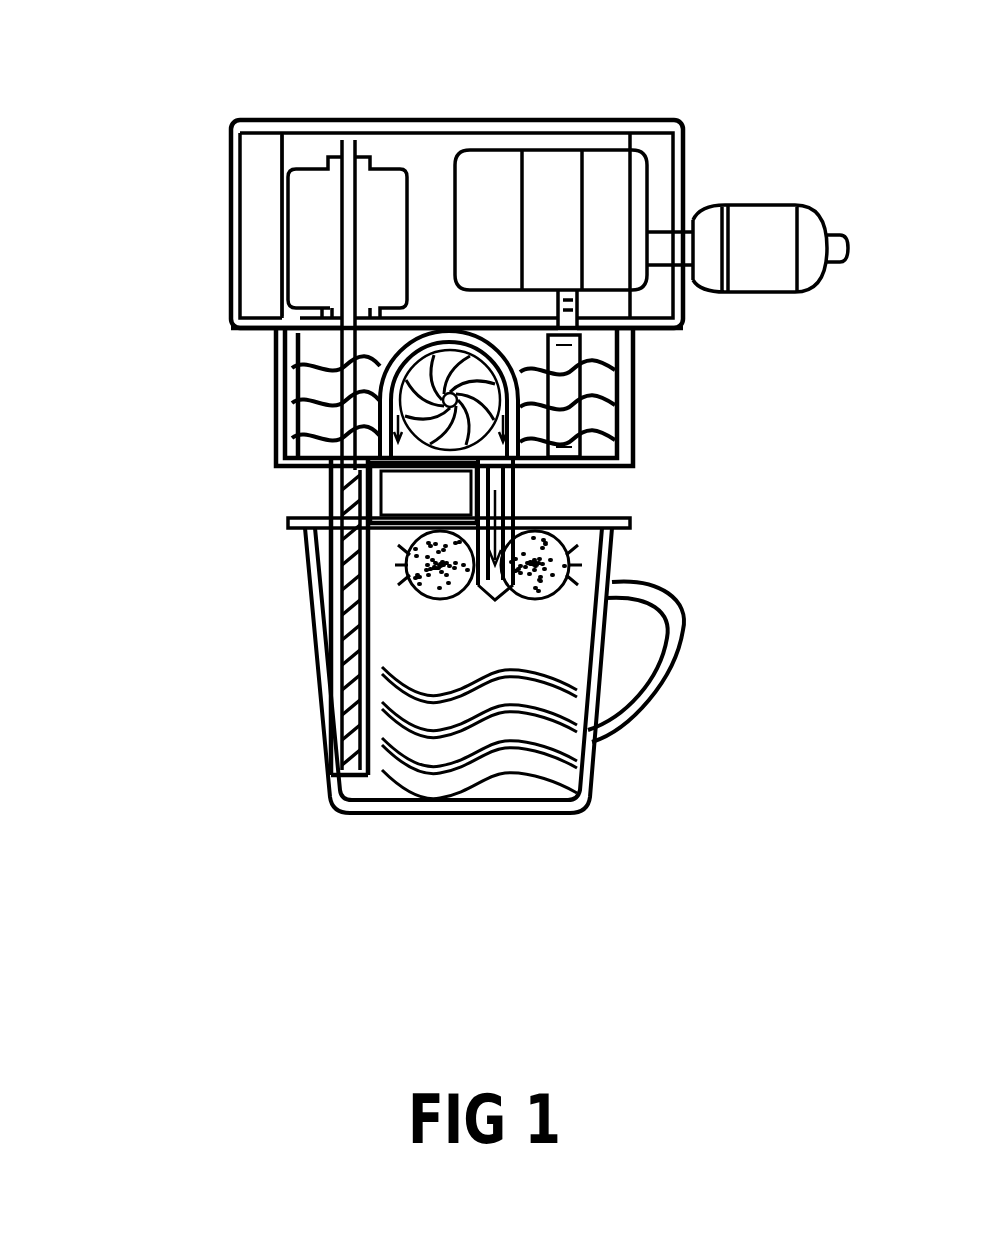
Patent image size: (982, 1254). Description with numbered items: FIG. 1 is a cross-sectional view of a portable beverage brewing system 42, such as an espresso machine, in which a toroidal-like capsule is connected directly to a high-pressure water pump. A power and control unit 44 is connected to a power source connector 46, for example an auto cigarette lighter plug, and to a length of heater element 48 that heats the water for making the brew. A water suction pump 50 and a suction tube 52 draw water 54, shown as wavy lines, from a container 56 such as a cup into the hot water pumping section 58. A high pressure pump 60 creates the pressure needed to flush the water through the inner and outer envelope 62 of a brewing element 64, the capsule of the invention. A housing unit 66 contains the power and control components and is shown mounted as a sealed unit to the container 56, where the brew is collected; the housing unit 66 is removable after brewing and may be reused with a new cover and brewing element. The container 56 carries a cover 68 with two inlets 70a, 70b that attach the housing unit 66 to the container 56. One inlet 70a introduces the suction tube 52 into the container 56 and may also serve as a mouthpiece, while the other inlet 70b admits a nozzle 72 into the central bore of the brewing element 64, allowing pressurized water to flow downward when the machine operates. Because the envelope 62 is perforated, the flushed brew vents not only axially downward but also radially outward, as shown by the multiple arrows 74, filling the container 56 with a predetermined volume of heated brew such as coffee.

The housing 42 is at (360, 97).
The power and control unit 44 is at (552, 190).
The power source connector 46 is at (740, 240).
The heater element 48 is at (588, 346).
The water suction pump 50 is at (320, 263).
The suction tube 52 is at (340, 606).
The water 54 is at (535, 714).
The container 56 is at (296, 746).
The hot water pumping section 58 is at (250, 352).
The high pressure pump 60 is at (408, 383).
The inner and outer envelope 62 is at (590, 566).
The brewing element 64 is at (570, 618).
The housing unit 66 is at (238, 190).
The cover 68 is at (625, 521).
The inlet 70a is at (325, 496).
The inlet 70b is at (530, 496).
The nozzle 72 is at (520, 478).
The arrows 74 is at (405, 600).